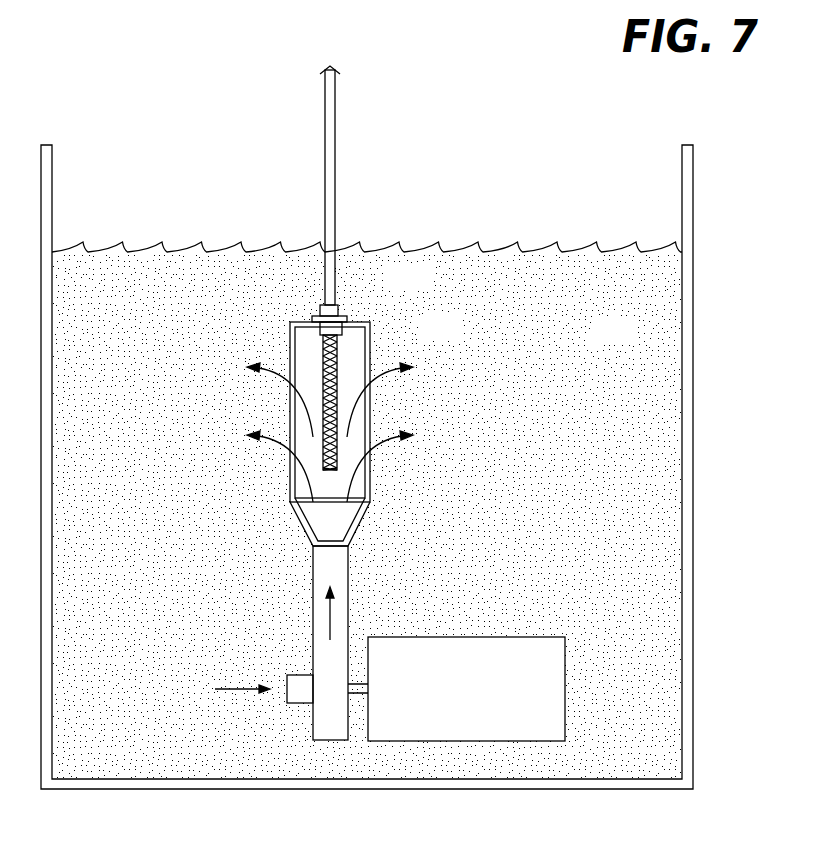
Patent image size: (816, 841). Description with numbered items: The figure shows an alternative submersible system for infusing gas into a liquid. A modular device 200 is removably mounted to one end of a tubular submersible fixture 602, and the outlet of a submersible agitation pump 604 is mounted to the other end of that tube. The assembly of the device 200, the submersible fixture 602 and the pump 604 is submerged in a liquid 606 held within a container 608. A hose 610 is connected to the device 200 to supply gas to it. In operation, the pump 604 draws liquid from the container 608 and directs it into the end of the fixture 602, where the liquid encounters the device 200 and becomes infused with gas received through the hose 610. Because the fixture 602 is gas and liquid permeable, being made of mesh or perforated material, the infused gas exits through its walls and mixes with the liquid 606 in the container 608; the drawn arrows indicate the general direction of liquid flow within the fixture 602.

The modular device 200 is at (347, 318).
The submersible fixture 602 is at (372, 333).
The submersible agitation pump 604 is at (485, 701).
The liquid 606 is at (631, 341).
The container 608 is at (693, 333).
The hose 610 is at (338, 130).